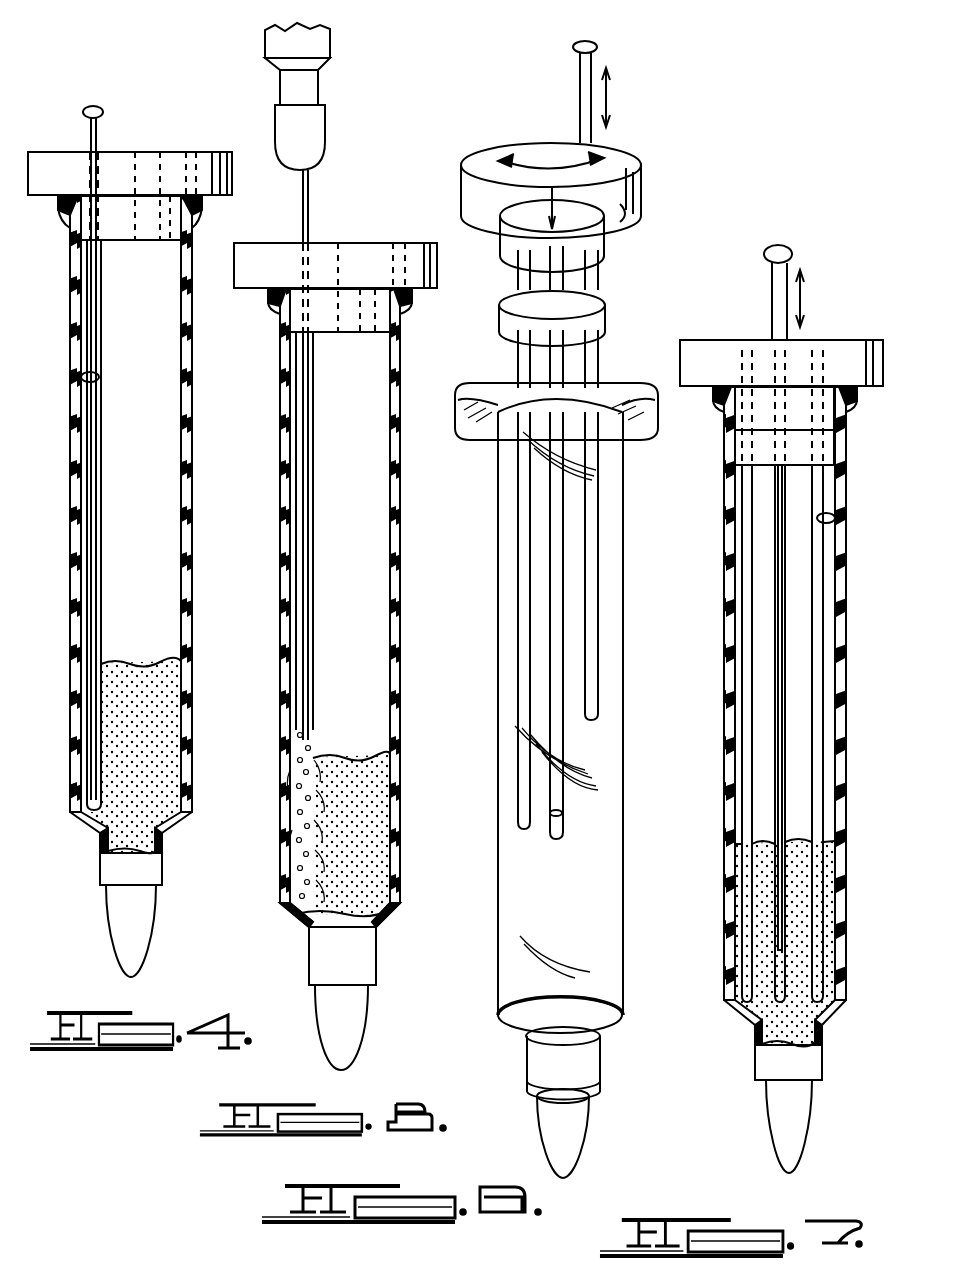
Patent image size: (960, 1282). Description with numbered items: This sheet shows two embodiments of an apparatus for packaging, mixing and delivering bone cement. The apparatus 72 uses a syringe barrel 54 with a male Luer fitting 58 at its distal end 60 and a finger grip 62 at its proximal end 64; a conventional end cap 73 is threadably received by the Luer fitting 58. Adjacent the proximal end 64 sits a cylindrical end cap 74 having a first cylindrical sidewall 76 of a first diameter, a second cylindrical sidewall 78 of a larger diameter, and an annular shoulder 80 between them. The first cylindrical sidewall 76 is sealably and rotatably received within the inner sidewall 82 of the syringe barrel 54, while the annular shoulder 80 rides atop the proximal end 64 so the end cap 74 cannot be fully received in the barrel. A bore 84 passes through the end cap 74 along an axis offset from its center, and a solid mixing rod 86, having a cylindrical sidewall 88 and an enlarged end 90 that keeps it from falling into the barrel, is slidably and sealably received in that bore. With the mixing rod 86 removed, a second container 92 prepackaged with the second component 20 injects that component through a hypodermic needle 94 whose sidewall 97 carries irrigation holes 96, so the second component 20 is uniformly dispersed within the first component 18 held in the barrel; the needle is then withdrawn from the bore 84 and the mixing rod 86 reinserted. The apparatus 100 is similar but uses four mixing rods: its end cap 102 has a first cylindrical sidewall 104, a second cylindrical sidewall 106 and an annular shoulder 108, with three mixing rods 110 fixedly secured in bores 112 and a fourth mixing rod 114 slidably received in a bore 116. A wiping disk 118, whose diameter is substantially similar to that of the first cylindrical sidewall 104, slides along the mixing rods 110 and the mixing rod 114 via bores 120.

In FIG. 4, the first component 18 is at (130, 746).
In FIG. 5, the first component 18 is at (360, 792).
In FIG. 7, the first component 18 is at (762, 892).
In FIG. 5, the second component 20 is at (345, 454).
In FIG. 4, the syringe barrel 54 is at (72, 526).
In FIG. 5, the syringe barrel 54 is at (353, 679).
In FIG. 6, the syringe barrel 54 is at (575, 795).
In FIG. 7, the syringe barrel 54 is at (848, 616).
In FIG. 4, the male Luer fitting 58 is at (106, 870).
In FIG. 5, the male Luer fitting 58 is at (314, 952).
In FIG. 6, the male Luer fitting 58 is at (530, 1070).
In FIG. 7, the male Luer fitting 58 is at (764, 1058).
In FIG. 4, the distal end 60 is at (104, 890).
In FIG. 5, the distal end 60 is at (314, 988).
In FIG. 4, the finger grip 62 is at (200, 206).
In FIG. 5, the finger grip 62 is at (404, 300).
In FIG. 6, the finger grip 62 is at (648, 425).
In FIG. 4, the proximal end 64 is at (172, 130).
In FIG. 5, the proximal end 64 is at (346, 228).
In FIG. 6, the proximal end 64 is at (640, 386).
In FIG. 4, the apparatus 72 is at (62, 85).
In FIG. 4, the end cap 73 is at (130, 952).
In FIG. 5, the end cap 73 is at (350, 1022).
In FIG. 6, the end cap 73 is at (574, 1142).
In FIG. 7, the end cap 73 is at (780, 1140).
In FIG. 4, the cylindrical end cap 74 is at (42, 160).
In FIG. 4, the first cylindrical sidewall 76 is at (136, 232).
In FIG. 5, the first cylindrical sidewall 76 is at (340, 310).
In FIG. 4, the second cylindrical sidewall 78 is at (236, 165).
In FIG. 4, the annular shoulder 80 is at (42, 200).
In FIG. 4, the inner sidewall 82 is at (82, 378).
In FIG. 7, the inner sidewall 82 is at (834, 518).
In FIG. 4, the bore 84 is at (104, 172).
In FIG. 4, the mixing rod 86 is at (101, 320).
In FIG. 4, the cylindrical sidewall 88 is at (100, 442).
In FIG. 4, the enlarged end 90 is at (95, 105).
In FIG. 5, the second syringe or container 92 is at (312, 50).
In FIG. 5, the hypodermic needle 94 is at (300, 384).
In FIG. 5, the irrigation holes 96 is at (312, 738).
In FIG. 5, the sidewall 97 is at (310, 572).
In FIG. 6, the apparatus 100 is at (616, 122).
In FIG. 6, the end cap 102 is at (596, 157).
In FIG. 6, the first cylindrical sidewall 104 is at (600, 232).
In FIG. 6, the second cylindrical sidewall 106 is at (640, 185).
In FIG. 7, the second cylindrical sidewall 106 is at (788, 509).
In FIG. 6, the annular shoulder 108 is at (628, 226).
In FIG. 6, the mixing rods 110 is at (574, 840).
In FIG. 7, the mixing rods 110 is at (830, 804).
In FIG. 6, the bores 112 is at (508, 270).
In FIG. 7, the bores 112 is at (826, 404).
In FIG. 6, the fourth cylindrical mixing rod 114 is at (580, 86).
In FIG. 7, the fourth cylindrical mixing rod 114 is at (770, 764).
In FIG. 6, the bore 116 is at (598, 262).
In FIG. 6, the wiping disk 118 is at (600, 292).
In FIG. 7, the wiping disk 118 is at (805, 440).
In FIG. 6, the bores 120 is at (606, 316).
In FIG. 7, the bores 120 is at (834, 458).